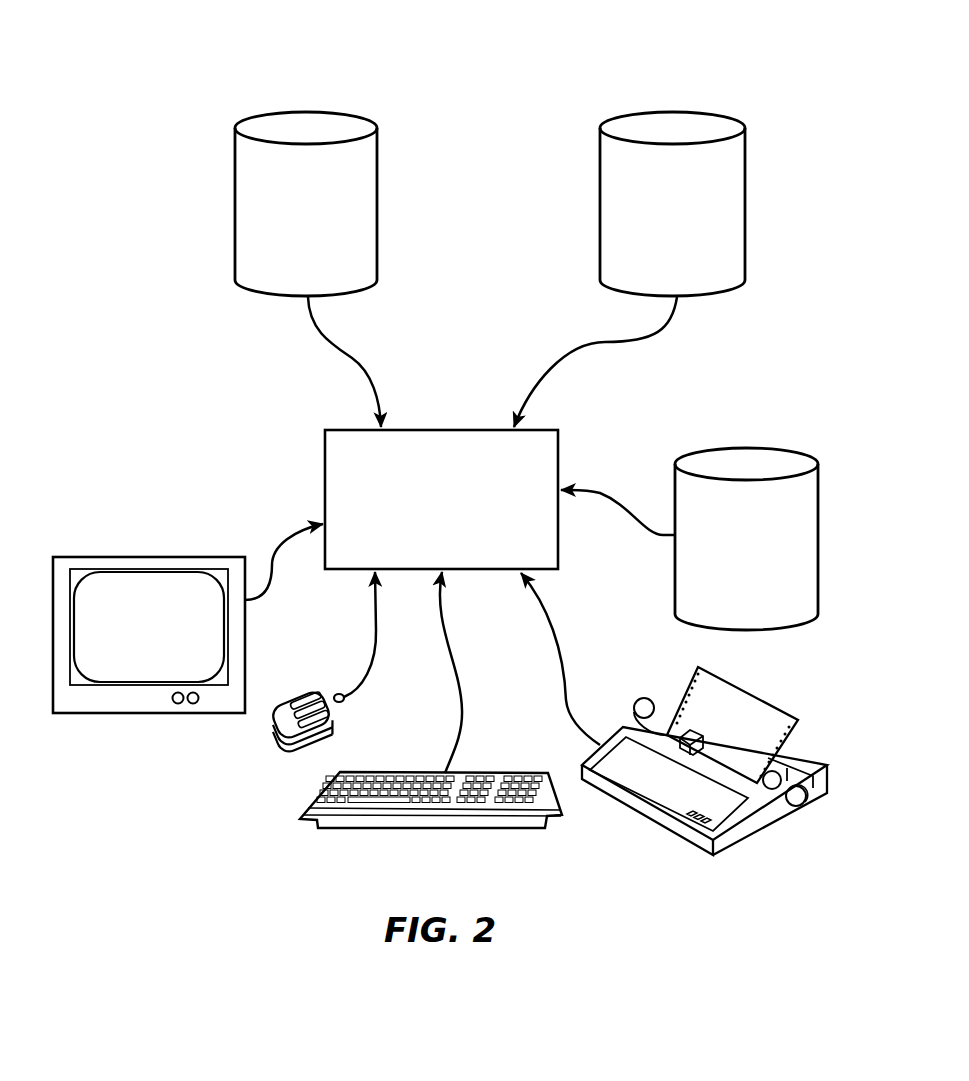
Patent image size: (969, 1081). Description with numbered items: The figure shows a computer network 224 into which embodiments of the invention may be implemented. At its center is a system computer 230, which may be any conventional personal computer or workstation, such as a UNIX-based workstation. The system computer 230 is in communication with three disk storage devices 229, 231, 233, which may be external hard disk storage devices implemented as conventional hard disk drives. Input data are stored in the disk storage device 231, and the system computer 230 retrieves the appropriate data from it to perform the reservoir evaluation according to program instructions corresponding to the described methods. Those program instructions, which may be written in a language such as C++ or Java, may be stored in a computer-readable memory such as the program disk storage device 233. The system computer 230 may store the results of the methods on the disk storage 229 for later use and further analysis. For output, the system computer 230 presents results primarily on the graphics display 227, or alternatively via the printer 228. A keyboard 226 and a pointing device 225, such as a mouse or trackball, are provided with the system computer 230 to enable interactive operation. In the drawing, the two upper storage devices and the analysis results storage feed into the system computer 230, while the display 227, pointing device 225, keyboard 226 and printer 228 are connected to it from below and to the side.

The computer network 224 is at (171, 46).
The pointing device 225 is at (316, 694).
The keyboard 226 is at (481, 830).
The graphics display 227 is at (104, 557).
The printer 228 is at (747, 838).
The disk storage device 229 is at (777, 448).
The system computer 230 is at (325, 458).
The disk storage device 231 is at (703, 112).
The program disk storage device 233 is at (278, 111).